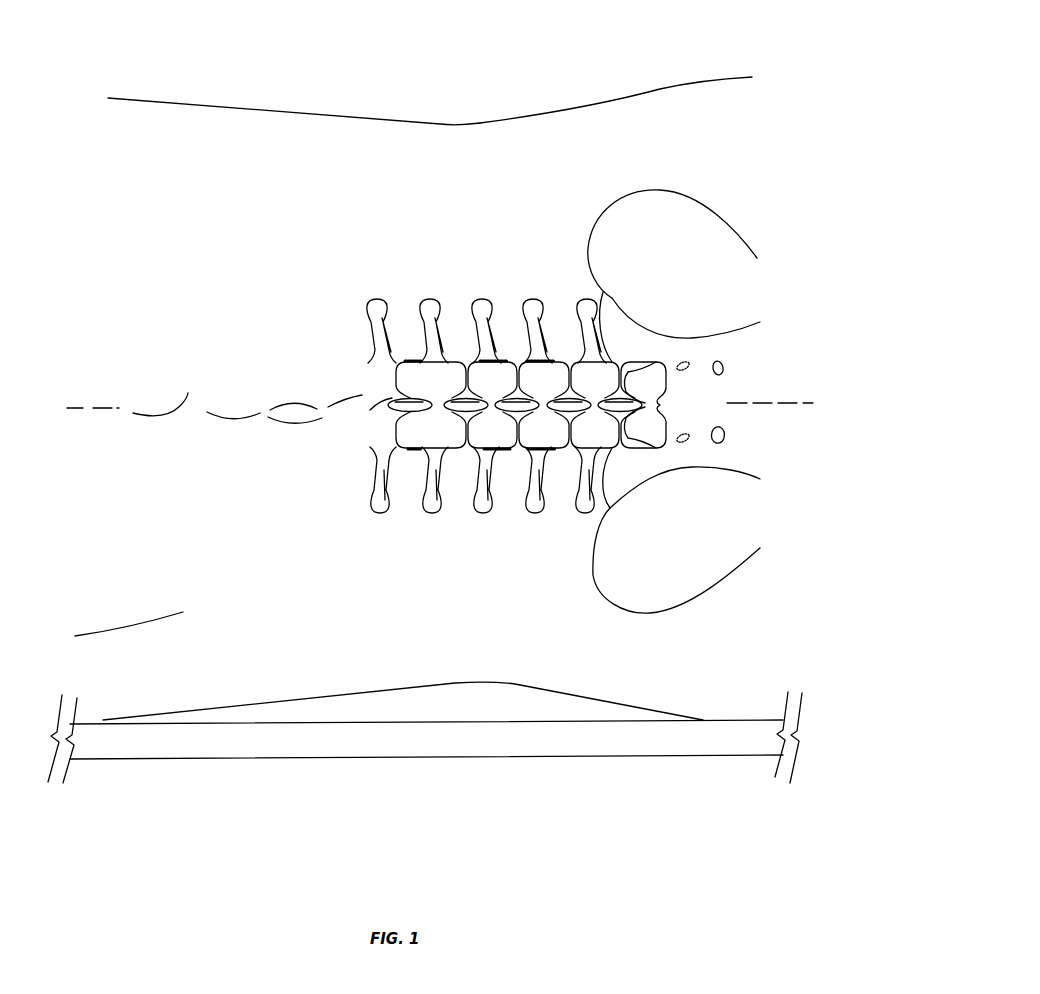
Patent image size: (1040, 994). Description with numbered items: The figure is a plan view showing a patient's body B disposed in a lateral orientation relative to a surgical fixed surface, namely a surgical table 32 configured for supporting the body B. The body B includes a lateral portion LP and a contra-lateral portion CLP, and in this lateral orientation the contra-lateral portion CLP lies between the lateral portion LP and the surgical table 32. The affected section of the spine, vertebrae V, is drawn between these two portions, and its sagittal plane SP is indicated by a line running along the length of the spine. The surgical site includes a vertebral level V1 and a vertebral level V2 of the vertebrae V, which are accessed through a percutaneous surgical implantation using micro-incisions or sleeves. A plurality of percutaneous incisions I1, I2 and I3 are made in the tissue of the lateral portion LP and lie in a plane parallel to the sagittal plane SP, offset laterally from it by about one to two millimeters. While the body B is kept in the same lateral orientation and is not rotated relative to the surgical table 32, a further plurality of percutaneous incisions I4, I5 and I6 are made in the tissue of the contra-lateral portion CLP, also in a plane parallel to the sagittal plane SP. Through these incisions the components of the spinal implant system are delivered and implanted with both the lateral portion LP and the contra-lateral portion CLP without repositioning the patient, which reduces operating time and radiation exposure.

The body B is at (693, 70).
The lateral portion LP is at (207, 123).
The contra-lateral portion CLP is at (110, 628).
The sagittal plane SP is at (437, 408).
The vertebrae V is at (450, 302).
The vertebral level V1 is at (480, 457).
The vertebral level V2 is at (537, 462).
The percutaneous incision I1 is at (553, 360).
The percutaneous incision I2 is at (498, 360).
The percutaneous incision I3 is at (413, 362).
The percutaneous incision I4 is at (556, 450).
The percutaneous incision I5 is at (503, 450).
The percutaneous incision I6 is at (417, 450).
The surgical table 32 is at (123, 745).